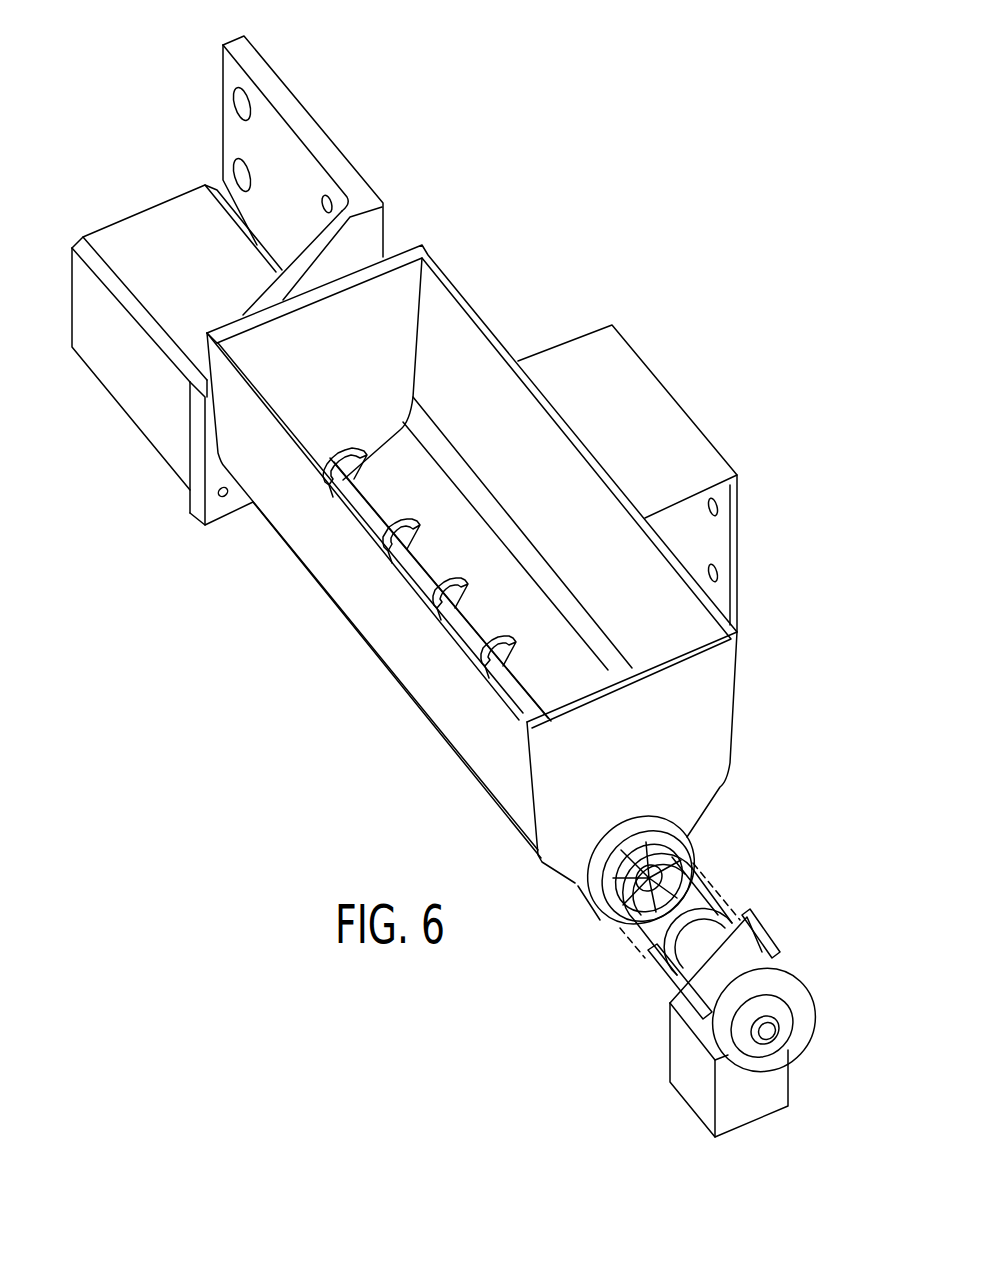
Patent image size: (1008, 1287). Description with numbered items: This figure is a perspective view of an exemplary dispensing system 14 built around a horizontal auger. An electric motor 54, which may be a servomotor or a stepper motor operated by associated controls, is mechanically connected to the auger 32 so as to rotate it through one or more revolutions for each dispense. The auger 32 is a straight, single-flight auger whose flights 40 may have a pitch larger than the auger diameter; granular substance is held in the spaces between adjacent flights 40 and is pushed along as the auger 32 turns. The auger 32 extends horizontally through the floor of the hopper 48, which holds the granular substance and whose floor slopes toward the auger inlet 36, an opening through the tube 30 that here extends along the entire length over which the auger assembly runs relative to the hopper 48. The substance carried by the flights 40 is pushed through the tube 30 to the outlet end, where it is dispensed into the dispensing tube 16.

The dispensing system 14 is at (692, 313).
The dispensing tube 16 is at (766, 1084).
The tube 30 is at (710, 881).
The auger 32 is at (418, 572).
The auger inlet 36 is at (500, 610).
The flights 40 is at (403, 523).
The hopper 48 is at (455, 335).
The electric motor 54 is at (128, 235).